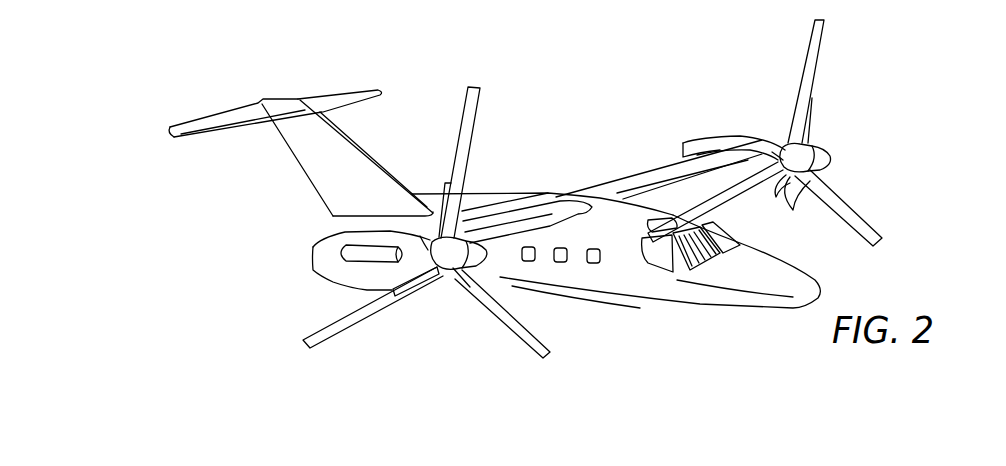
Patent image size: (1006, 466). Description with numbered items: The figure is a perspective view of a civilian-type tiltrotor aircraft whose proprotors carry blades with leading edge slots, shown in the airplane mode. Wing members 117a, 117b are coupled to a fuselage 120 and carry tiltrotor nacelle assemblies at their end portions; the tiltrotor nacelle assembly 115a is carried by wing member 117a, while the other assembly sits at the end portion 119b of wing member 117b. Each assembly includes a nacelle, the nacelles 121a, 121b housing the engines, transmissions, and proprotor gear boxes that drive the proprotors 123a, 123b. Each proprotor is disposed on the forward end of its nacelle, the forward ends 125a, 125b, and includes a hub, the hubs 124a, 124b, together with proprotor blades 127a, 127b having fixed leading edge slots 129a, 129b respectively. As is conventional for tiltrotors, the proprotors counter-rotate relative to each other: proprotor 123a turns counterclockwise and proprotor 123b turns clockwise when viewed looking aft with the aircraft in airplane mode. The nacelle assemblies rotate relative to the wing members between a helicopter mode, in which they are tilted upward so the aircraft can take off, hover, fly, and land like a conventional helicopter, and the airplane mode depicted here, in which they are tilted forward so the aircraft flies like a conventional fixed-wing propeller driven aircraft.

The tiltrotor nacelle assembly 115a is at (287, 237).
The wing member 117a is at (518, 210).
The wing member 117b is at (633, 180).
The end portion 119b is at (737, 153).
The fuselage 120 is at (712, 312).
The nacelle 121a is at (312, 258).
The nacelle 121b is at (700, 150).
The proprotor 123a is at (460, 356).
The proprotor 123b is at (905, 122).
The hub 124a is at (460, 283).
The hub 124b is at (842, 163).
The forward end 125a is at (420, 240).
The forward end 125b is at (772, 152).
The proprotor blade 127a is at (480, 103).
The proprotor blade 127b is at (823, 38).
The fixed leading edge slot 129a is at (447, 192).
The fixed leading edge slot 129b is at (813, 103).